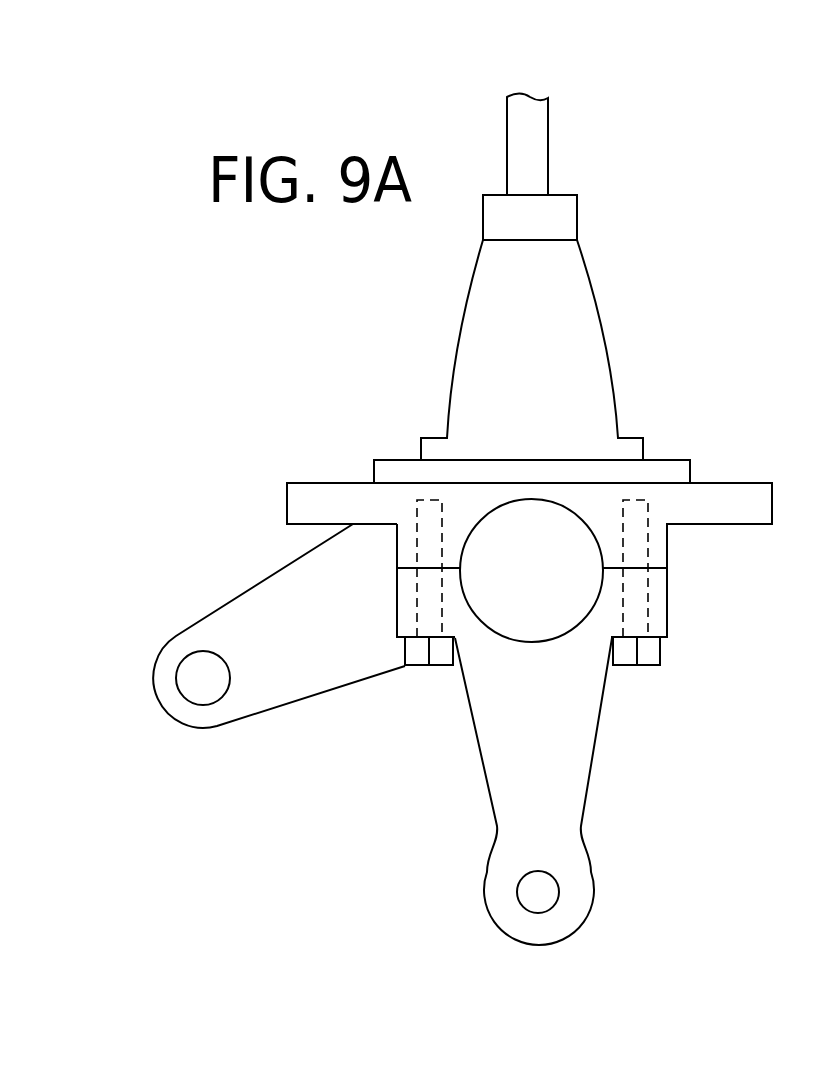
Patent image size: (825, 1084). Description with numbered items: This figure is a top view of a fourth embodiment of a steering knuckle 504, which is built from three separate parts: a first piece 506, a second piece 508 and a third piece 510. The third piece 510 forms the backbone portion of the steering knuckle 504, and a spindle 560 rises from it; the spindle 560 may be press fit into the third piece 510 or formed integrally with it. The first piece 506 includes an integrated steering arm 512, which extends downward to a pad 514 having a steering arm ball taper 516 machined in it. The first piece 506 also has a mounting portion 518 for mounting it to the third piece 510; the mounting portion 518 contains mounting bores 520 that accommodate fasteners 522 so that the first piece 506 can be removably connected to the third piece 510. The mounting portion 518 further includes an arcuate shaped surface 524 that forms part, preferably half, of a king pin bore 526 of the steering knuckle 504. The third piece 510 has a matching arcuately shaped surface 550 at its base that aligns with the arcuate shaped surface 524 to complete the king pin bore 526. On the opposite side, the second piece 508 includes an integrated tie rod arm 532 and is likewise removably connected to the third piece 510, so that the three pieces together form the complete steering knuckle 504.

The steering knuckle 504 is at (372, 394).
The first piece 506 is at (613, 733).
The second piece 508 is at (240, 569).
The third piece 510 is at (694, 446).
The integrated steering arm 512 is at (507, 740).
The pad 514 is at (500, 897).
The steering arm ball taper 516 is at (542, 897).
The mounting portion 518 is at (607, 616).
The mounting bores 520 is at (427, 614).
The fasteners 522 is at (440, 653).
The arcuate shaped surface 524 is at (523, 641).
The king pin bore 526 is at (525, 591).
The integrated tie rod arm 532 is at (258, 686).
The arcuately shaped surface 550 is at (539, 500).
The spindle 560 is at (583, 317).